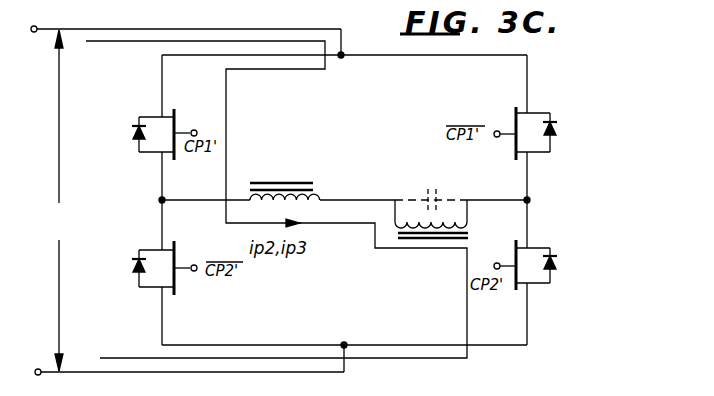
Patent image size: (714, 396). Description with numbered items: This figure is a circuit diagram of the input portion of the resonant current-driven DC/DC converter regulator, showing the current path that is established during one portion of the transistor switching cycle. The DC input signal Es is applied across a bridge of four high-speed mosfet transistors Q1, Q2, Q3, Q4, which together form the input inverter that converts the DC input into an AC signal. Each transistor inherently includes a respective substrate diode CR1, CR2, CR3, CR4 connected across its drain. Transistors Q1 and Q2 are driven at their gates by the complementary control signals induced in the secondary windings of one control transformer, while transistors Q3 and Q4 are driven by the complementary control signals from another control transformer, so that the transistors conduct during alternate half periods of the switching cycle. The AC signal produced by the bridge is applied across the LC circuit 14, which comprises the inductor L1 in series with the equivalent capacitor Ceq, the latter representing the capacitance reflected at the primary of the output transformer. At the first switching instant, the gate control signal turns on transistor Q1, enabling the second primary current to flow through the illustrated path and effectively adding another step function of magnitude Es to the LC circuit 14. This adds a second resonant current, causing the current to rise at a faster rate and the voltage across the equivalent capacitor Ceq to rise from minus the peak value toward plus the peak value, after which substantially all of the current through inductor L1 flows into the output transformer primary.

The LC circuit 14 is at (344, 184).
The inductor L1 is at (285, 180).
The equivalent capacitor Ceq is at (431, 202).
The DC input signal Es is at (189, 200).
The mosfet transistor Q1 is at (168, 122).
The mosfet transistor Q2 is at (529, 122).
The mosfet transistor Q3 is at (168, 283).
The mosfet transistor Q4 is at (529, 282).
The substrate diode CR1 is at (115, 134).
The substrate diode CR2 is at (570, 132).
The substrate diode CR3 is at (114, 268).
The substrate diode CR4 is at (570, 265).